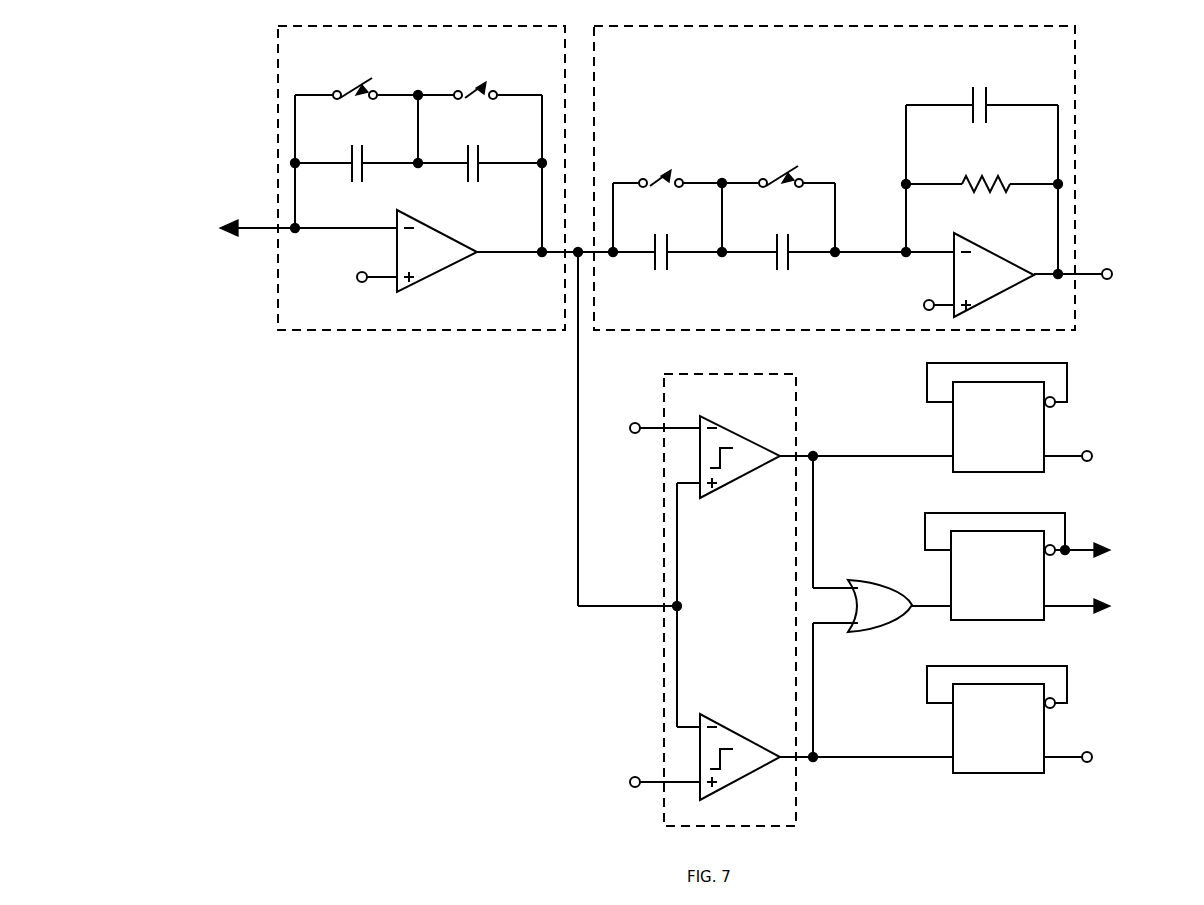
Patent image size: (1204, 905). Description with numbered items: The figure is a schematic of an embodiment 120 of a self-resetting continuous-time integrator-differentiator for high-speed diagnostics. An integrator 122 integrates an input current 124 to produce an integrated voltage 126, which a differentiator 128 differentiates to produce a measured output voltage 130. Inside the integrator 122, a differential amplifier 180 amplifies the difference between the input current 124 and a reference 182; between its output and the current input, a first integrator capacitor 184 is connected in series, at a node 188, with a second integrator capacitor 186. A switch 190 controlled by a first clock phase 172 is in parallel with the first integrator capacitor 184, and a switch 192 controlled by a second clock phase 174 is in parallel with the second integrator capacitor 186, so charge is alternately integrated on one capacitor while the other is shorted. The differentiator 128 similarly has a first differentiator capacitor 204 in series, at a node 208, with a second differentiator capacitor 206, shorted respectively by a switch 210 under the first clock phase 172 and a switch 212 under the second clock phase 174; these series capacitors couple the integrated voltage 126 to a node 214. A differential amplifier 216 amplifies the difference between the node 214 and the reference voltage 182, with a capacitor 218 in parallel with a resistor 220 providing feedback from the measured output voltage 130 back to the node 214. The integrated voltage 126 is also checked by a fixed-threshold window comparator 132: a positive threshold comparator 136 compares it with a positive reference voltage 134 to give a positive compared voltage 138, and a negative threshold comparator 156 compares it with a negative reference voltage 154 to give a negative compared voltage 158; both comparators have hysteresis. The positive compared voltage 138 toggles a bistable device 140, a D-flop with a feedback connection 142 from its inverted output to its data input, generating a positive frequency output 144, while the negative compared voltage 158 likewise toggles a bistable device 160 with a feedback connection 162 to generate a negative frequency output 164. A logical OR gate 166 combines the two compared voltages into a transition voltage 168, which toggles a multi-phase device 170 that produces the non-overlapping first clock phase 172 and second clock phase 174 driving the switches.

The self-resetting continuous-time architecture embodiment 120 is at (398, 500).
The integrator 122 is at (421, 178).
The input current 124 is at (262, 224).
The integrated voltage 126 is at (576, 262).
The differentiator 128 is at (834, 178).
The measured output voltage 130 is at (1112, 262).
The fixed-threshold window comparator 132 is at (730, 600).
The positive reference voltage 134 is at (631, 434).
The positive threshold comparator 136 is at (740, 457).
The positive compared voltage 138 is at (845, 459).
The bistable device 140 is at (998, 427).
The feedback connection 142 is at (1053, 366).
The positive frequency output 144 is at (1085, 450).
The negative reference voltage 154 is at (630, 775).
The negative threshold comparator 156 is at (740, 757).
The negative compared voltage 158 is at (843, 757).
The bistable device 160 is at (998, 728).
The feedback connection 162 is at (1059, 668).
The negative frequency output 164 is at (1082, 752).
The logical OR gate 166 is at (880, 606).
The transition voltage 168 is at (930, 608).
The multi-phase device 170 is at (997, 575).
The first clock phase 172 is at (1072, 547).
The second clock phase 174 is at (1065, 603).
The differential amplifier 180 is at (505, 251).
The reference voltage 182 is at (362, 283).
The first integrator capacitor 184 is at (357, 146).
The second integrator capacitor 186 is at (472, 146).
The node 188 is at (418, 130).
The switch 190 is at (348, 86).
The switch 192 is at (462, 90).
The first differentiator capacitor 204 is at (782, 235).
The second differentiator capacitor 206 is at (668, 235).
The node 208 is at (722, 222).
The switch 210 is at (775, 176).
The switch 212 is at (660, 176).
The node 214 is at (860, 256).
The differential amplifier 216 is at (994, 275).
The capacitor 218 is at (975, 90).
The resistor 220 is at (982, 172).